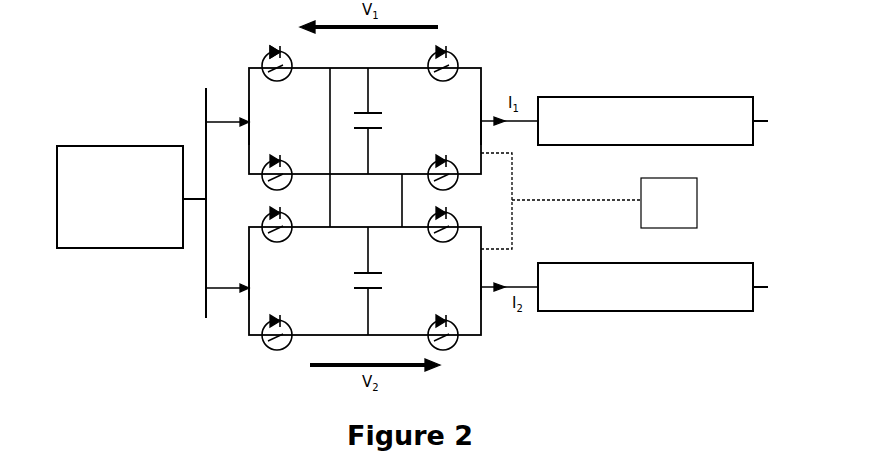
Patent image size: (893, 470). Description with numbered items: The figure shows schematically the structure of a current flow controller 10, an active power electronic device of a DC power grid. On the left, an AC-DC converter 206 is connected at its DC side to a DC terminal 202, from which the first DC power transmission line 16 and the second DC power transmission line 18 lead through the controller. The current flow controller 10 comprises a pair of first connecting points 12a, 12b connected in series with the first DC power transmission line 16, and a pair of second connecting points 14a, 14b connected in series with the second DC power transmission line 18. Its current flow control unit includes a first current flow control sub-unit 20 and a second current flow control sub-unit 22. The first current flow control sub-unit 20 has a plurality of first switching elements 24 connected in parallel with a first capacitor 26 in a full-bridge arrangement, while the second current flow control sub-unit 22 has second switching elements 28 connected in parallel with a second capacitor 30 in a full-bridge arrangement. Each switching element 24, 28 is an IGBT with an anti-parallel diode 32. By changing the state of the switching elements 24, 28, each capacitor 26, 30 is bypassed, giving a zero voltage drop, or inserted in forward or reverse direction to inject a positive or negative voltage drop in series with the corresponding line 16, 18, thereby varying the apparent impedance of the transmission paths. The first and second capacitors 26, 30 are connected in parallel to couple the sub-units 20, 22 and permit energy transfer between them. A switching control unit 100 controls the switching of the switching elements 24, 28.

The current flow controller 10 is at (496, 59).
The first connecting point 12a is at (247, 130).
The first connecting point 12b is at (484, 118).
The second connecting point 14a is at (247, 279).
The second connecting point 14b is at (483, 292).
The first DC power transmission line 16 is at (624, 121).
The second DC power transmission line 18 is at (624, 287).
The first current flow control sub-unit 20 is at (263, 108).
The second current flow control sub-unit 22 is at (466, 306).
The first switching element 24 is at (284, 166).
The first capacitor 26 is at (381, 123).
The second switching element 28 is at (291, 232).
The second capacitor 30 is at (355, 282).
The anti-parallel diode 32 is at (276, 46).
The switching control unit 100 is at (589, 201).
The DC terminal 202 is at (197, 199).
The AC-DC converter 206 is at (120, 197).